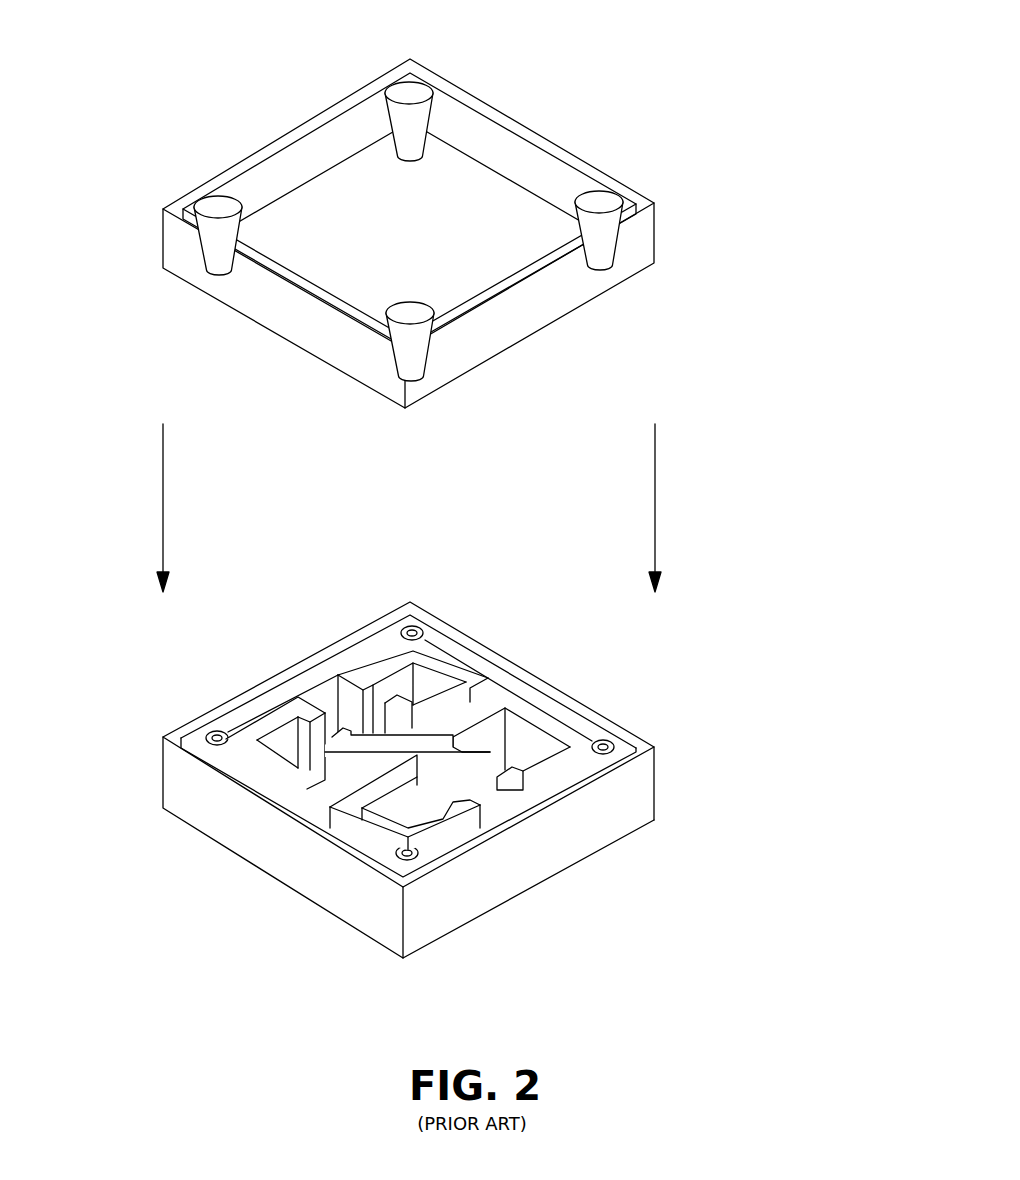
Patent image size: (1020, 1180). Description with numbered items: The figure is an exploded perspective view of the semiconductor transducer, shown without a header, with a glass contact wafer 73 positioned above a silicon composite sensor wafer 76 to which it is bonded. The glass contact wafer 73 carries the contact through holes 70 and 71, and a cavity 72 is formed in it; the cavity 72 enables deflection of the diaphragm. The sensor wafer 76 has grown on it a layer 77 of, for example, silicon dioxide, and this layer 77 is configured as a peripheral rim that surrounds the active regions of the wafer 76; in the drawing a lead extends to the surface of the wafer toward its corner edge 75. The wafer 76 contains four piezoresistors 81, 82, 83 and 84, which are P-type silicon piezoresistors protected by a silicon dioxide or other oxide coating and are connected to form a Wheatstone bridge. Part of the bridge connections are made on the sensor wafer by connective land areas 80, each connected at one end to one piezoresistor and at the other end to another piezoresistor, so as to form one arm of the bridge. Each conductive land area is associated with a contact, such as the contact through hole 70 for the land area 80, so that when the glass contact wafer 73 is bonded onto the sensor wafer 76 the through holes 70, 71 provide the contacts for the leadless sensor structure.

The contact through hole 70 is at (407, 88).
The contact through hole 71 is at (215, 202).
The cavity 72 is at (480, 276).
The glass contact wafer 73 is at (512, 143).
The corner edge of base 75 is at (657, 760).
The silicon composite sensor wafer 76 is at (570, 838).
The silicon dioxide layer 77 is at (575, 782).
The connective land area 80 is at (253, 750).
The piezoresistor 81 is at (347, 733).
The piezoresistor 82 is at (398, 815).
The piezoresistor 83 is at (363, 675).
The piezoresistor 84 is at (484, 800).